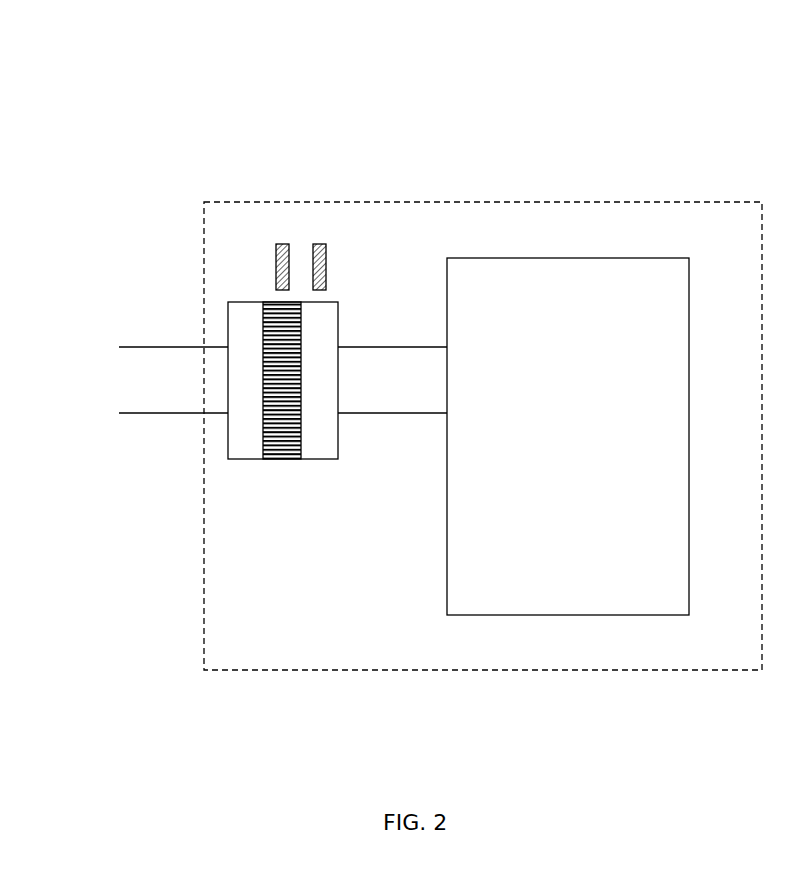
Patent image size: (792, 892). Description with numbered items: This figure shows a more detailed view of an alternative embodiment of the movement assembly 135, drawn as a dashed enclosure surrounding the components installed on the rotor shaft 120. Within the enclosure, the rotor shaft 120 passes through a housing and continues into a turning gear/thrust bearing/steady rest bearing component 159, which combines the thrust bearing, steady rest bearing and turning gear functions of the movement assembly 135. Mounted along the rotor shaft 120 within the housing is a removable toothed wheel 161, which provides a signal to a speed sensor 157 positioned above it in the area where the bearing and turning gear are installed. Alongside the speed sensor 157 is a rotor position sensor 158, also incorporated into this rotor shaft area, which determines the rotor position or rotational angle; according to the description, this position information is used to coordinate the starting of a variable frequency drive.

The rotor shaft 120 is at (155, 380).
The movement assembly 135 is at (447, 201).
The speed sensor 157 is at (264, 246).
The rotor position sensor 158 is at (313, 236).
The turning gear/thrust bearing/steady rest bearing component 159 is at (568, 257).
The removable toothed wheel 161 is at (288, 468).